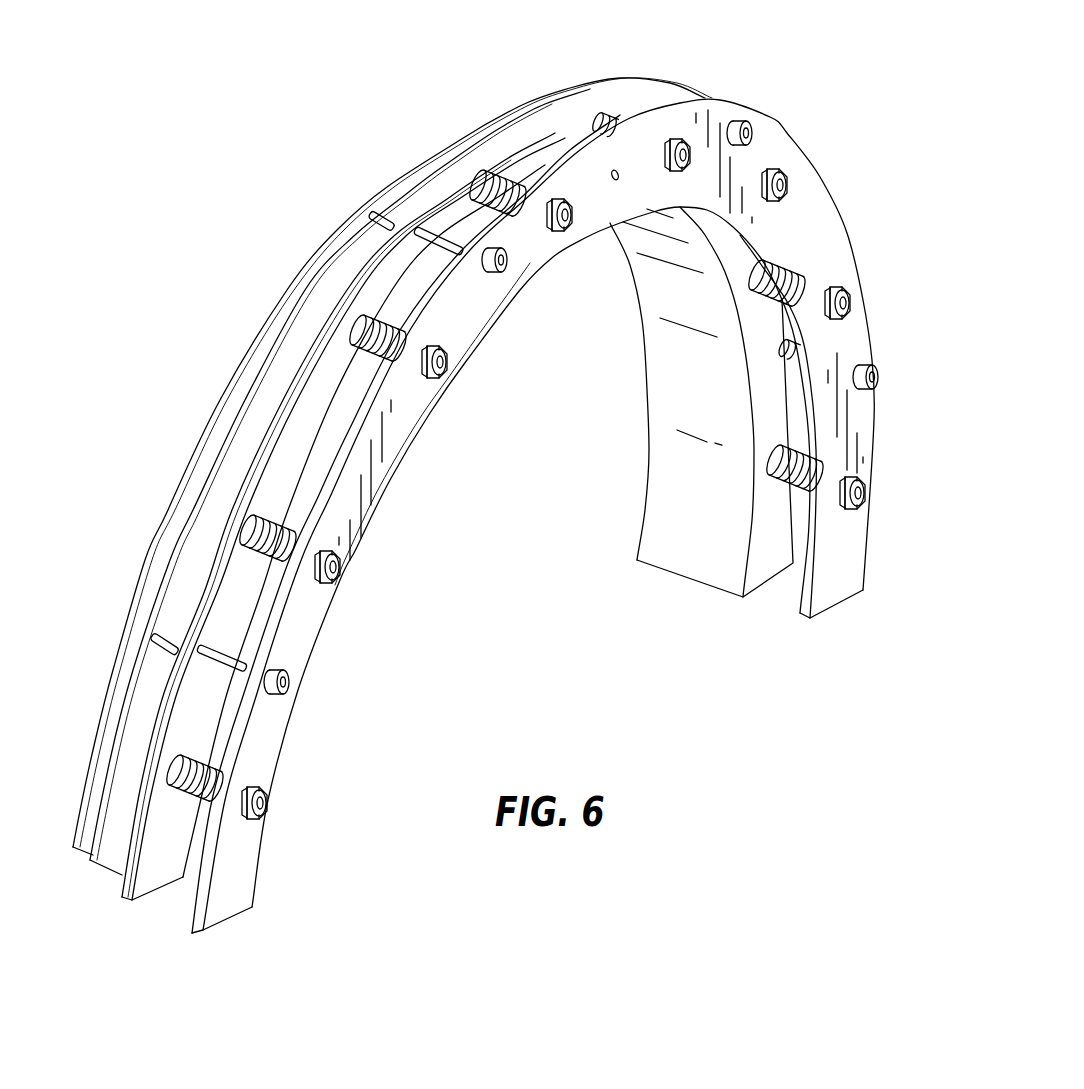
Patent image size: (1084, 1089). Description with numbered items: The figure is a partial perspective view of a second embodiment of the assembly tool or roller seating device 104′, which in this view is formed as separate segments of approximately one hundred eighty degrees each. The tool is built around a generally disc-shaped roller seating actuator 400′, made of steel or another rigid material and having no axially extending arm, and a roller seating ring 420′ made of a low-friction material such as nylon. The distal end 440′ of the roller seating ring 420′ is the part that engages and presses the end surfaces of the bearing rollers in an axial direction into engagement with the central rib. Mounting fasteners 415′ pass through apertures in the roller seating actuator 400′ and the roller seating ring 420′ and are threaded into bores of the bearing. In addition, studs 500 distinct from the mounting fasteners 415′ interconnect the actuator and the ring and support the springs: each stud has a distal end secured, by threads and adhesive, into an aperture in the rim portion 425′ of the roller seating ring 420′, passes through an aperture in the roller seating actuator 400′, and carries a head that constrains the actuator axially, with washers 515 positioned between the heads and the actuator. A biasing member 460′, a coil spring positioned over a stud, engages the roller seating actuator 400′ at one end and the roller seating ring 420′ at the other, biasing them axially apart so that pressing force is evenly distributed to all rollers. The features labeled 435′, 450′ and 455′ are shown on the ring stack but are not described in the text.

The roller seating device 104′ is at (830, 92).
The roller seating actuator 400′ is at (217, 913).
The mounting fasteners 415′ is at (290, 683).
The roller seating ring 420′ is at (127, 900).
The rim portion 425′ is at (203, 597).
The thin ring 435′ is at (347, 243).
The distal end 440′ is at (287, 293).
The ring layer 450′ is at (287, 358).
The ring layer 455′ is at (233, 407).
The biasing member 460′ is at (507, 177).
The studs 500 is at (268, 808).
The washers 515 is at (240, 813).